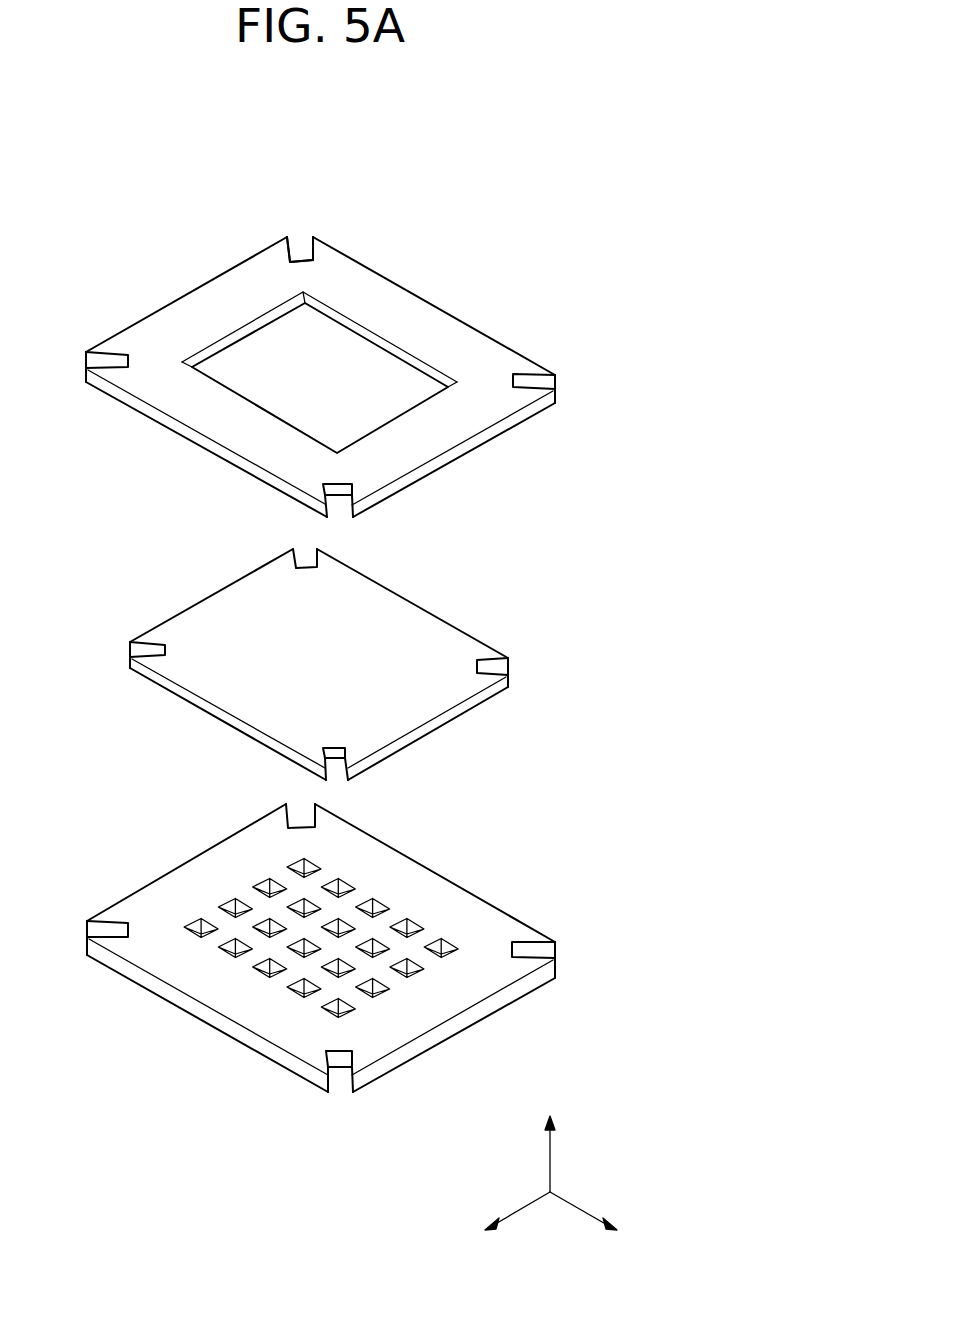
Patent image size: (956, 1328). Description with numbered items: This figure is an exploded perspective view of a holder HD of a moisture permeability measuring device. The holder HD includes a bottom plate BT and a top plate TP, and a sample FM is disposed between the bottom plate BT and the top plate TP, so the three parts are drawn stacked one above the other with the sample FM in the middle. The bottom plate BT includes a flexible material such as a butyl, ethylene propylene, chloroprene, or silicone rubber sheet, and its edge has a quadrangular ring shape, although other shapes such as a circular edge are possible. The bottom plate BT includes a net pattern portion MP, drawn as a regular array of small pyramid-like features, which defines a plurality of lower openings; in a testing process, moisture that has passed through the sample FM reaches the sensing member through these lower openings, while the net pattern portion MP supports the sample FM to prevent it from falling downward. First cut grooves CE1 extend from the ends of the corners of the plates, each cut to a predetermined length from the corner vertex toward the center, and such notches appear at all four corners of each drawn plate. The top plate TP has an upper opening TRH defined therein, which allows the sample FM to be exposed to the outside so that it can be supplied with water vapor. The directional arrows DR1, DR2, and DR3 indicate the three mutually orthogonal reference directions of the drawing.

The holder HD is at (128, 221).
The first cut groove CE1 is at (300, 240).
The upper opening TRH is at (342, 355).
The top plate TP is at (493, 355).
The sample FM is at (446, 640).
The net pattern portion MP is at (412, 930).
The bottom plate BT is at (493, 932).
The first direction DR1 is at (493, 1224).
The second direction DR2 is at (608, 1224).
The third direction DR3 is at (551, 1140).